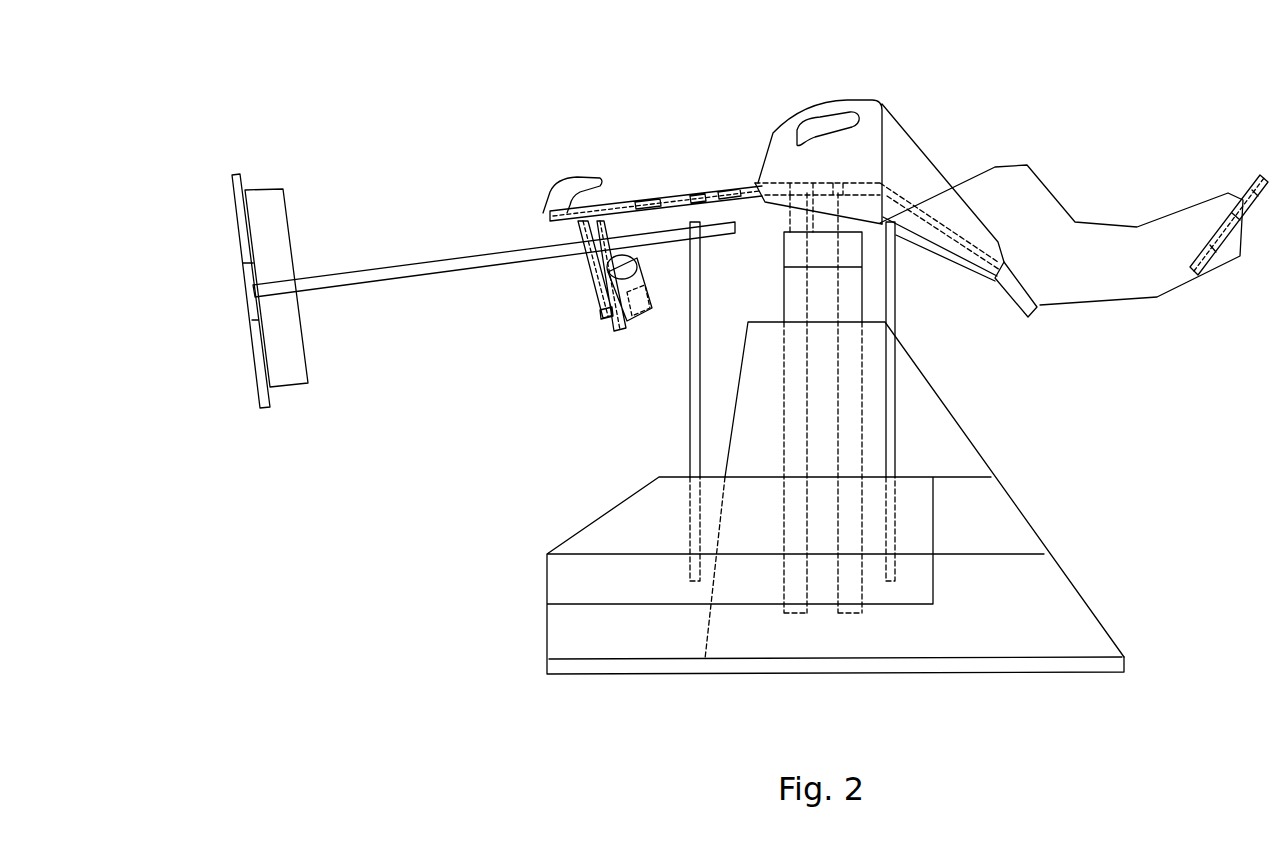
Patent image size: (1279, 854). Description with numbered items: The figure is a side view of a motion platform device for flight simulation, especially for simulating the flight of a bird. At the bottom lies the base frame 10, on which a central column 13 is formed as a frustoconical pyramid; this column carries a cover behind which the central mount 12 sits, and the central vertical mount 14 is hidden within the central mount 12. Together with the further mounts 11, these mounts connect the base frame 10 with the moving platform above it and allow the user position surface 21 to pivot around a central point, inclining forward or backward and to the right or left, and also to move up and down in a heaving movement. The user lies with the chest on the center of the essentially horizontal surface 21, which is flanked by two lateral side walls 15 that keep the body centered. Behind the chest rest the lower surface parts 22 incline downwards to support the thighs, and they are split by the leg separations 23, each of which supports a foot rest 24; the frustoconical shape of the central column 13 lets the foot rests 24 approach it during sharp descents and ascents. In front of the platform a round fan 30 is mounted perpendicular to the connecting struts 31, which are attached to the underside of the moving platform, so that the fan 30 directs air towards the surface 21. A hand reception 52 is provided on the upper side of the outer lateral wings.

The base frame 10 is at (580, 577).
The mount 11 is at (690, 383).
The central mount 12 is at (790, 280).
The central column 13 is at (938, 426).
The central vertical mount 14 is at (817, 224).
The lateral side wall 15 is at (905, 150).
The user position surface 21 is at (802, 182).
The lower surface part 22 is at (1007, 287).
The leg separation 23 is at (1023, 212).
The foot rest 24 is at (1227, 230).
The fan 30 is at (268, 223).
The connecting strut 31 is at (433, 260).
The hand reception 52 is at (577, 182).